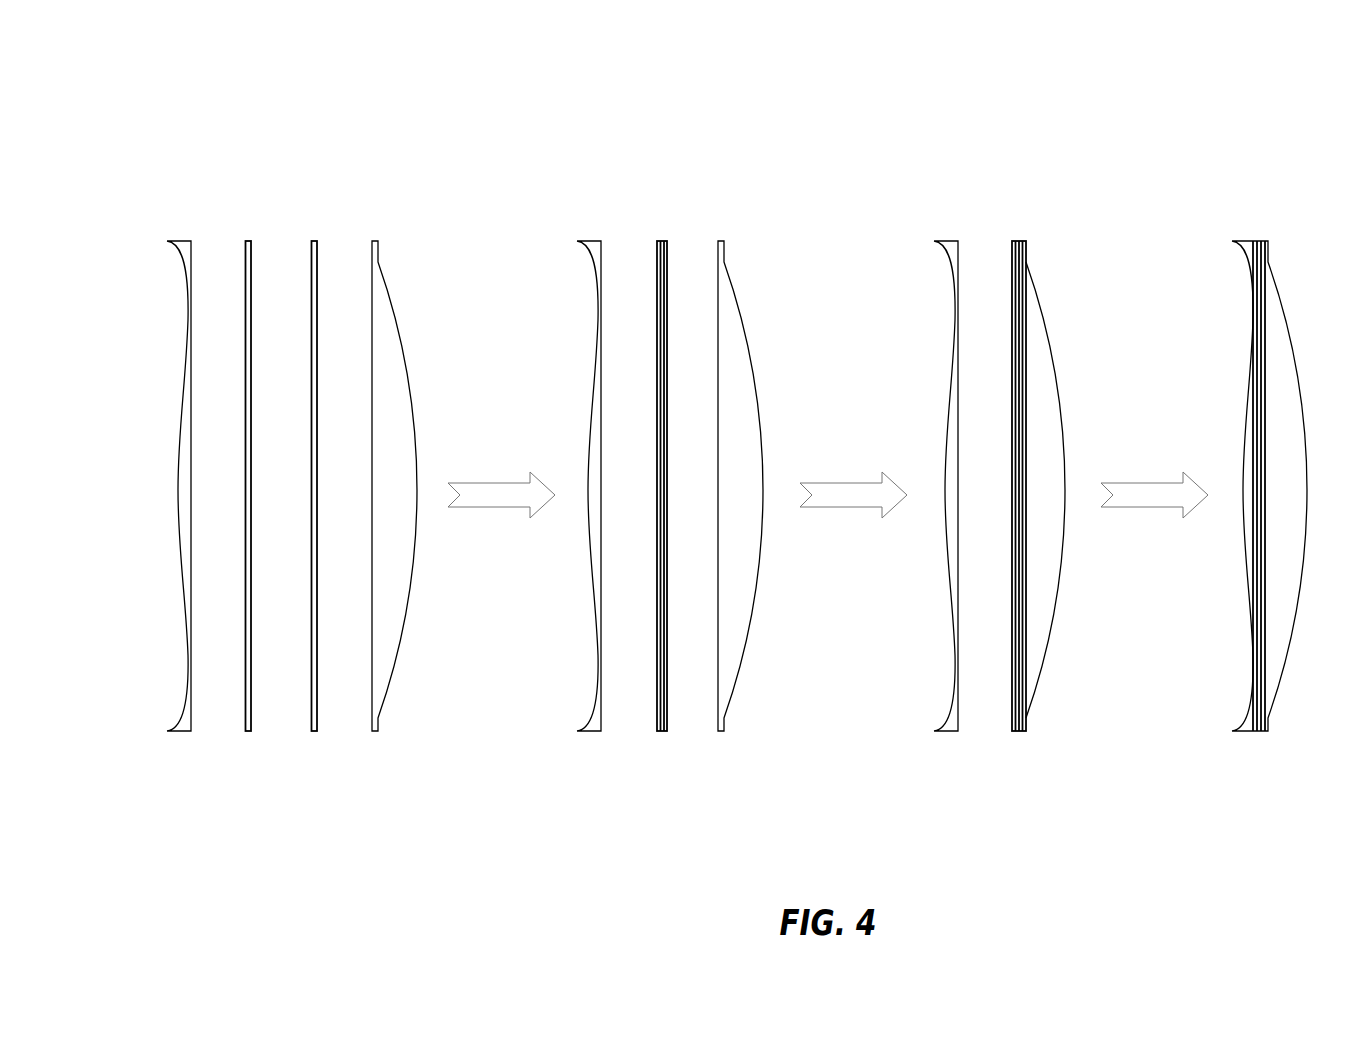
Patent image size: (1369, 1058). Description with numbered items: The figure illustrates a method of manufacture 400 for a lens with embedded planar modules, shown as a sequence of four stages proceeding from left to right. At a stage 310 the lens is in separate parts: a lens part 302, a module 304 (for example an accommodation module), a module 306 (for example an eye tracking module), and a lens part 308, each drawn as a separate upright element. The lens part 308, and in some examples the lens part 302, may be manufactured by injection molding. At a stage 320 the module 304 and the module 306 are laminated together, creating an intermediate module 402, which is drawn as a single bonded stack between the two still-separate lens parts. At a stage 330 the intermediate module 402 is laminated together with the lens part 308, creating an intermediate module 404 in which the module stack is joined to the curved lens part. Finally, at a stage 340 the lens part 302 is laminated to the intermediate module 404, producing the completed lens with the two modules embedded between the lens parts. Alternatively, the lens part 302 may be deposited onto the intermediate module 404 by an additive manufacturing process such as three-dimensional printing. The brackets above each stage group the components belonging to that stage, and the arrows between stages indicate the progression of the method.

The method of manufacture 400 is at (225, 89).
The stage 310 is at (167, 215).
The stage 320 is at (577, 215).
The stage 330 is at (1067, 215).
The stage 340 is at (1232, 215).
The lens part 302 is at (178, 735).
The module 304 is at (248, 735).
The module 306 is at (315, 735).
The lens part 308 is at (374, 735).
The intermediate module 402 is at (660, 735).
The intermediate module 404 is at (1014, 735).